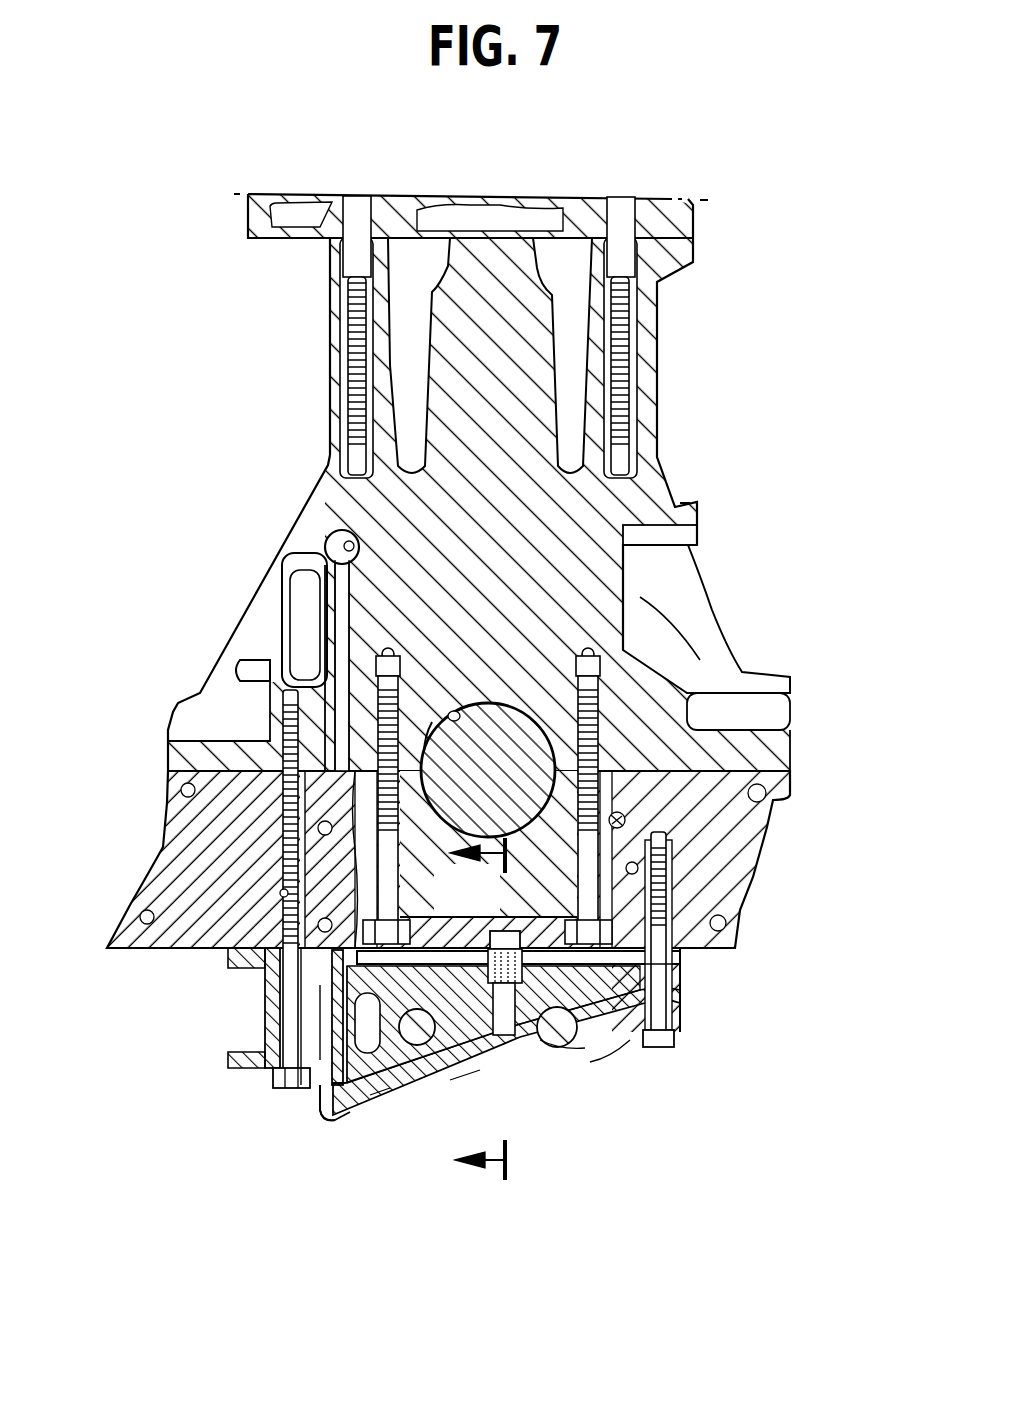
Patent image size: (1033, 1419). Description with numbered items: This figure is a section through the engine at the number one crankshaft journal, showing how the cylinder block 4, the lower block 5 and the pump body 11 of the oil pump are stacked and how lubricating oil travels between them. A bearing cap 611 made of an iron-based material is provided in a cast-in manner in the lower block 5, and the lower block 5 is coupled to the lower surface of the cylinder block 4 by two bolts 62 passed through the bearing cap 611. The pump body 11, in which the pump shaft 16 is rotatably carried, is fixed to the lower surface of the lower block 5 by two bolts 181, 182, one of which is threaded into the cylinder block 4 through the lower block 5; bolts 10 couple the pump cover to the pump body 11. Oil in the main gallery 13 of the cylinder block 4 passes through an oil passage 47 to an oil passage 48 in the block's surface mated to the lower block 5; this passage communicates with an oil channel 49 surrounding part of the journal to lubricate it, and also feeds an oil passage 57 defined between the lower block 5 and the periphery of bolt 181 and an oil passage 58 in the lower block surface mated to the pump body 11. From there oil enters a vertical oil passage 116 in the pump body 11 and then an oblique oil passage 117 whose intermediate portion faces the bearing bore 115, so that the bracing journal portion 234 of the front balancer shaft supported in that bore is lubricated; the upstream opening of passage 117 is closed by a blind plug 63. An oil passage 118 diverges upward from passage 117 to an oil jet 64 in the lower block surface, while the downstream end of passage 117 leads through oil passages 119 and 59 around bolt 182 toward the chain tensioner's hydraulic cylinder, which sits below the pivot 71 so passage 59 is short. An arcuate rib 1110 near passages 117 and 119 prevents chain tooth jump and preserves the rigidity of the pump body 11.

The cylinder block 4 is at (287, 518).
The lower block 5 is at (146, 839).
The pump body 11 is at (253, 1013).
The main gallery 13 is at (359, 548).
The pump shaft 16 is at (419, 1046).
The oil passage 47 is at (348, 616).
The oil passage 48 is at (397, 710).
The oil channel 49 is at (459, 710).
The bolts 62 is at (400, 668).
The oil jet 64 is at (508, 914).
The pivot 71 is at (622, 812).
The bearing cap 611 is at (338, 856).
The oil passage 57 is at (280, 895).
The oil passage 58 is at (317, 1016).
The oil passage 59 is at (705, 958).
The oil passage 118 is at (493, 1004).
The oil passage 119 is at (668, 992).
The oil passage 117 is at (470, 1075).
The bearing bore 115 is at (550, 1050).
The oil passage 116 is at (380, 1085).
The arcuate rib 1110 is at (597, 1068).
The bracing journal portion 234 is at (585, 1060).
The bolt 182 is at (668, 1047).
The bolt 181 is at (290, 1090).
The blind plug 63 is at (333, 1122).
The bolts 10 is at (469, 1034).